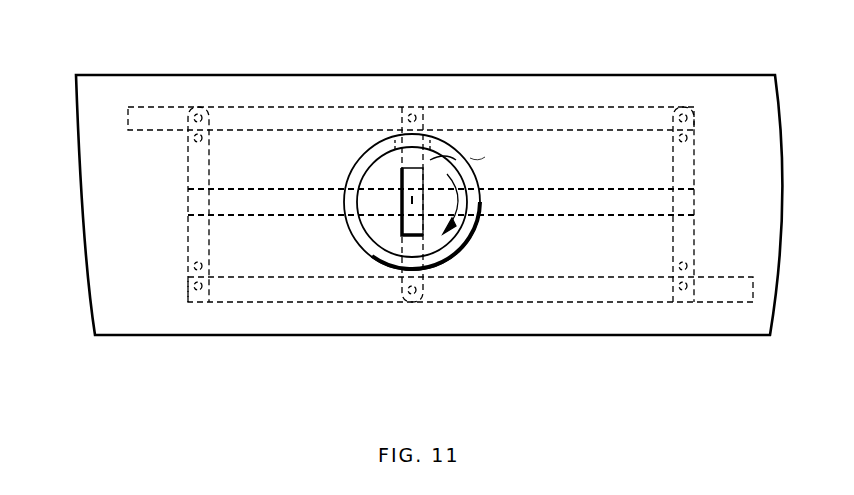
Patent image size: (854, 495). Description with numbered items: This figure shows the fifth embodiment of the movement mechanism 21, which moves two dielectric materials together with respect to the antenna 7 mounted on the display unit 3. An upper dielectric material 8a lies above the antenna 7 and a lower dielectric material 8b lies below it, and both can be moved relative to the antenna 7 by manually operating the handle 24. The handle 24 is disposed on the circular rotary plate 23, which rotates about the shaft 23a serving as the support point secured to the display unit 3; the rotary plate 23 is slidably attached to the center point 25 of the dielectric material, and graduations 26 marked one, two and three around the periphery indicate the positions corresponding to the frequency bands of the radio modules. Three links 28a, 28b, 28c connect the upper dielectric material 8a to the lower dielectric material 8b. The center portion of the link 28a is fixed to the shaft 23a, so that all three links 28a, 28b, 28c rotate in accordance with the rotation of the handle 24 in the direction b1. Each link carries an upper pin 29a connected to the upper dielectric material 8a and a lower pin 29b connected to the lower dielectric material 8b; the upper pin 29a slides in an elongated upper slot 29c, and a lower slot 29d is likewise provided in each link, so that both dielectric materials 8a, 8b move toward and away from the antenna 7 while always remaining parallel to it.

The display unit 3 is at (165, 335).
The antenna 7 is at (560, 215).
The upper dielectric material 8a is at (626, 125).
The lower dielectric material 8b is at (733, 292).
The movement mechanism 21 is at (345, 160).
The rotary plate 23 is at (455, 152).
The shaft 23a is at (402, 236).
The handle 24 is at (400, 196).
The center point 25 is at (440, 152).
The graduations 26 is at (470, 160).
The link 28a is at (390, 150).
The link 28b is at (193, 178).
The link 28c is at (690, 177).
The upper pin 29a is at (197, 107).
The lower pin 29b is at (190, 290).
The upper slot 29c is at (208, 142).
The lower slot 29d is at (190, 262).
The rotation direction b1 is at (465, 222).